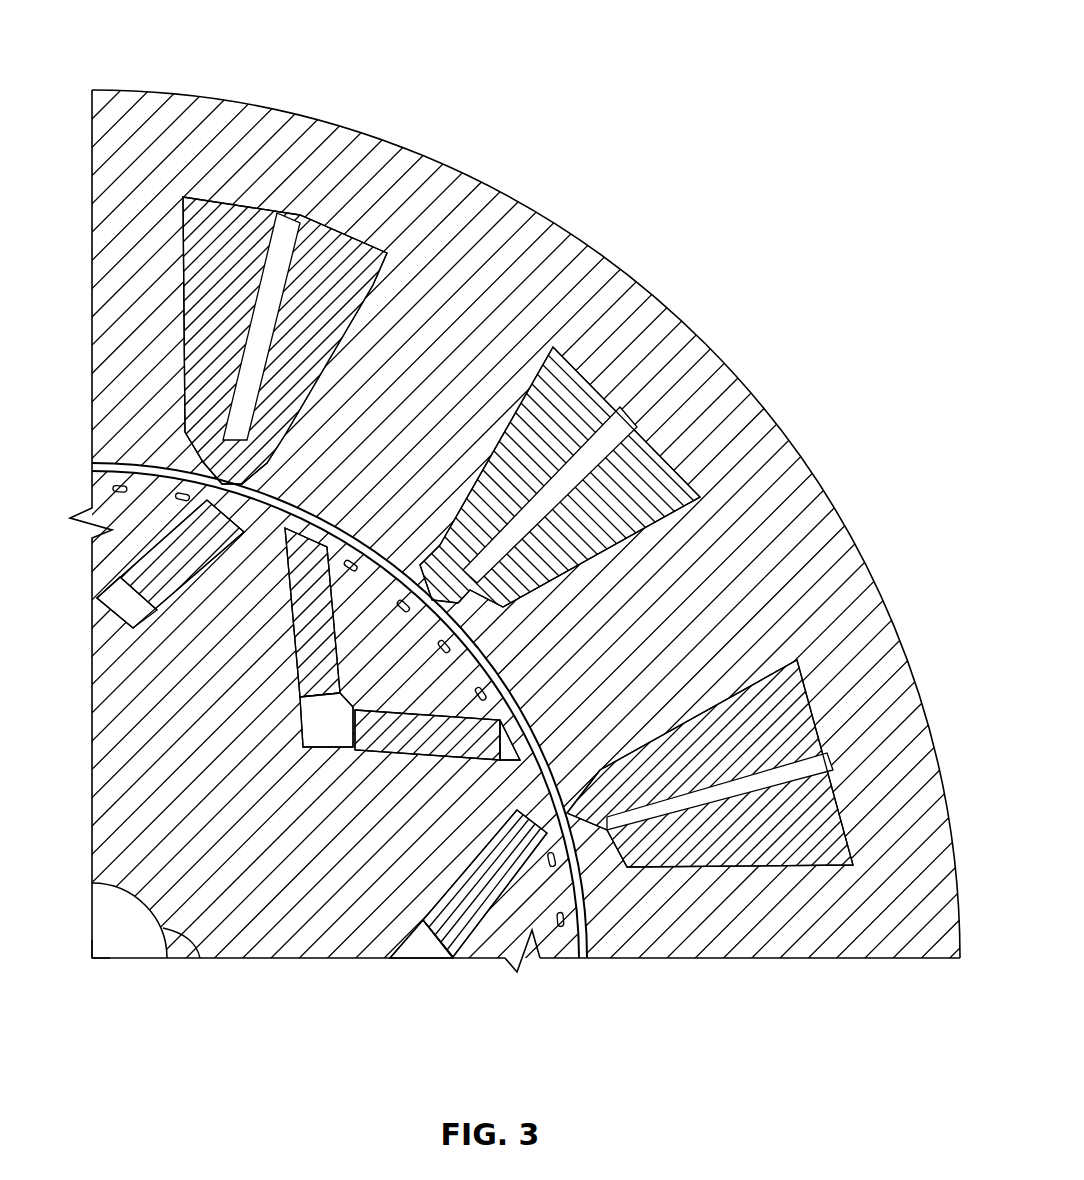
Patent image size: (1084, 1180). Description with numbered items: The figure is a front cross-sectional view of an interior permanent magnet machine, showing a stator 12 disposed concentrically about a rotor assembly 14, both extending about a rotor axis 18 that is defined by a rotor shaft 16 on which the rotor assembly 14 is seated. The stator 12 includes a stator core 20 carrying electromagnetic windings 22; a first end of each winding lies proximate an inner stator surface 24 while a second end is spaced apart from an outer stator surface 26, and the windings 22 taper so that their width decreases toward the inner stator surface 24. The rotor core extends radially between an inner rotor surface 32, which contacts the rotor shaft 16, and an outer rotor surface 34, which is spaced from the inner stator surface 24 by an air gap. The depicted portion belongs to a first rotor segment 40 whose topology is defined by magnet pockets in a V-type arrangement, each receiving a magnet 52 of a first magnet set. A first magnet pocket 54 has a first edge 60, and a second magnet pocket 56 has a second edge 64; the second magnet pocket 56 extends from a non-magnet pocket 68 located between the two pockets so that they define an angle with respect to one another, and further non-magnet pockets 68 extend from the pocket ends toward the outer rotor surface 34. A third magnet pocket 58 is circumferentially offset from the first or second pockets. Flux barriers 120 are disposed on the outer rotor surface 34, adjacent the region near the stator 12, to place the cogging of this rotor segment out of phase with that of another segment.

The stator 12 is at (205, 85).
The rotor assembly 14 is at (345, 1040).
The rotor shaft 16 is at (130, 935).
The rotor axis 18 is at (92, 958).
The stator core 20 is at (760, 935).
The electromagnetic windings 22 is at (640, 405).
The inner stator surface 24 is at (585, 935).
The outer stator surface 26 is at (868, 575).
The inner rotor surface 32 is at (190, 935).
The outer rotor surface 34 is at (540, 960).
The first rotor segment 40 is at (352, 968).
The magnet 52 is at (293, 637).
The first magnet pocket 54 is at (315, 643).
The second magnet pocket 56 is at (365, 762).
The third magnet pocket 58 is at (432, 893).
The first edge 60 is at (280, 630).
The second edge 64 is at (390, 760).
The non-magnet pocket 68 is at (350, 550).
The flux barriers 120 is at (398, 583).